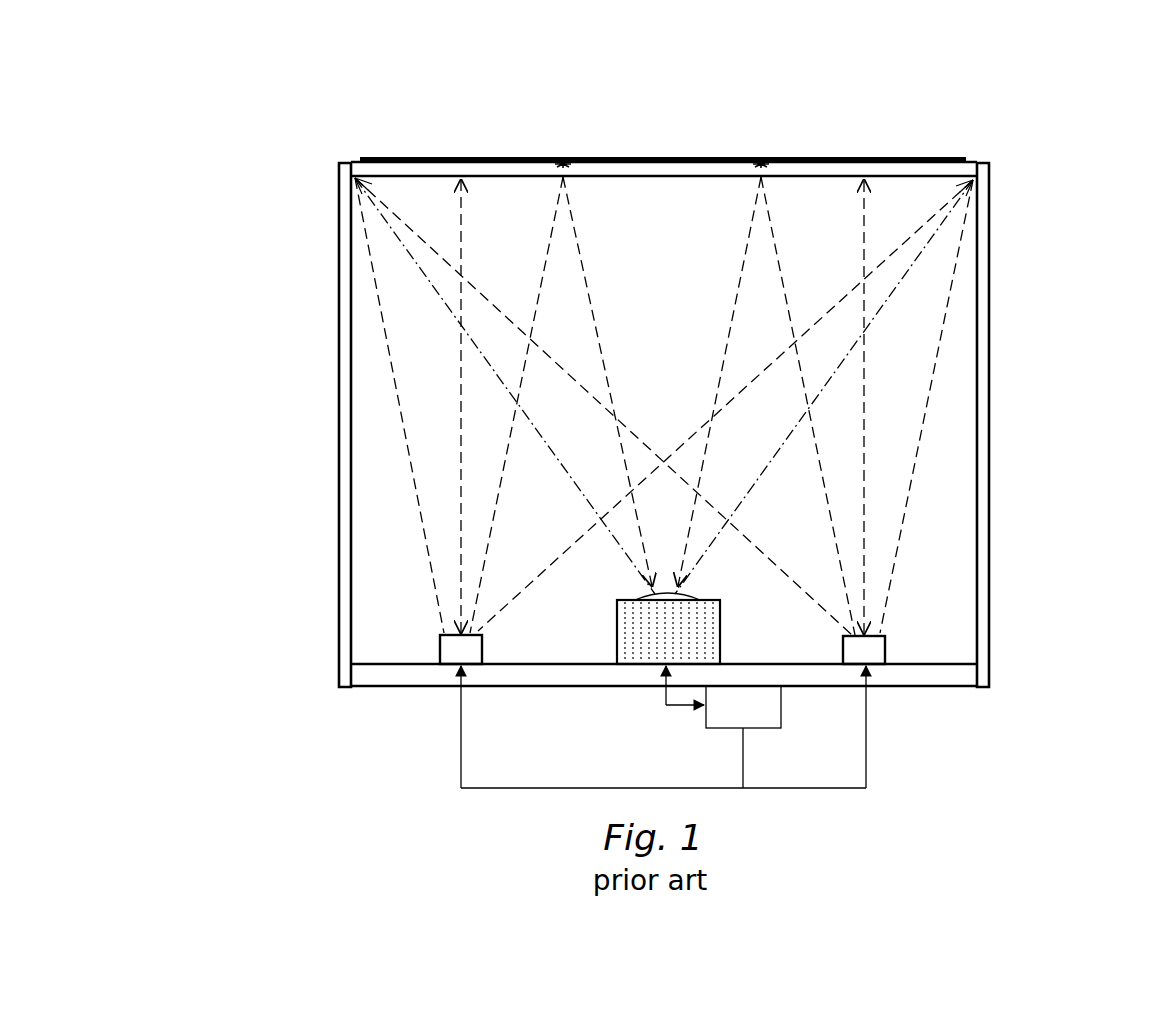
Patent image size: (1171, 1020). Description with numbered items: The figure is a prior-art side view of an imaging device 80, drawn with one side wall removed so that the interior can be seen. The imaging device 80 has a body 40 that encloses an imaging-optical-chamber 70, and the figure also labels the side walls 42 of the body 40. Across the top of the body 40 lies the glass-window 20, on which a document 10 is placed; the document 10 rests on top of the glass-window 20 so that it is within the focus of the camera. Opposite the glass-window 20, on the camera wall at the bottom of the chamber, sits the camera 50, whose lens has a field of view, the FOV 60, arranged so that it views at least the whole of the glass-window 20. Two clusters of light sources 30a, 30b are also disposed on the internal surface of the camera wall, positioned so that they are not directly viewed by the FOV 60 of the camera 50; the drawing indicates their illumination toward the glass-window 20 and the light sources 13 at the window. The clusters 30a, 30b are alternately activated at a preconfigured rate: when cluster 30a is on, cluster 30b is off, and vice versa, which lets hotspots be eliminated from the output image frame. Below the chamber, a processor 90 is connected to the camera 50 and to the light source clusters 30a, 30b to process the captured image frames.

The imaging device 80 is at (992, 118).
The body 40 is at (336, 364).
The housing side walls 42 is at (342, 607).
The document 10 is at (674, 155).
The glass-window 20 is at (512, 162).
The imaging-optical-chamber 70 is at (805, 190).
The light sources 13 is at (563, 160).
The FOV 60 is at (836, 378).
The light source cluster 30a is at (450, 650).
The light source cluster 30b is at (875, 650).
The camera 50 is at (638, 648).
The processor 90 is at (770, 728).